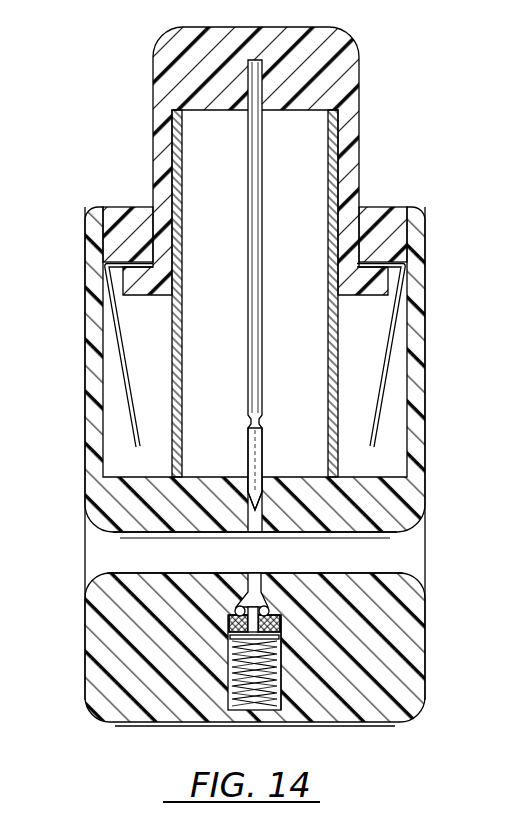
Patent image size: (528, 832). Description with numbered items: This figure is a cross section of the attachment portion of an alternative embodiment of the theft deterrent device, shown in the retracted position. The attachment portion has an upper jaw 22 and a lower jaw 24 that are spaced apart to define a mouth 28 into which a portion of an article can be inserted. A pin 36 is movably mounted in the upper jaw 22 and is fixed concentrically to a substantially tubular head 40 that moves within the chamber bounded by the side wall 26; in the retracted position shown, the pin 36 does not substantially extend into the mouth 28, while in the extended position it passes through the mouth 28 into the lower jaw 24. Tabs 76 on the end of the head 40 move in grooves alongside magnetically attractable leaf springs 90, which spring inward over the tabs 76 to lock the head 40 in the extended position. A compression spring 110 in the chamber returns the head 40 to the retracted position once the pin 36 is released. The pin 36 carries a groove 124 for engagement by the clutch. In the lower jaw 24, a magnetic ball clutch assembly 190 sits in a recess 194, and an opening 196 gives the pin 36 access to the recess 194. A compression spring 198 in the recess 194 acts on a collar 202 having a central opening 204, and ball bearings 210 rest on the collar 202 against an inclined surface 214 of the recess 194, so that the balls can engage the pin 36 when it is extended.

The upper jaw 22 is at (436, 231).
The lower jaw 24 is at (420, 660).
The side wall 26 is at (427, 404).
The mouth 28 is at (416, 555).
The pin 36 is at (263, 291).
The head 40 is at (360, 105).
The tabs 76 is at (368, 298).
The leaf spring 90 is at (388, 355).
The compression spring 110 is at (177, 377).
The groove 124 is at (262, 420).
The magnetic ball clutch assembly 190 is at (219, 688).
The recess 194 is at (278, 678).
The opening 196 is at (257, 578).
The compression spring 198 is at (271, 708).
The collar 202 is at (229, 625).
The central opening 204 is at (123, 693).
The ball bearings 210 is at (228, 616).
The inclined surface 214 is at (237, 604).